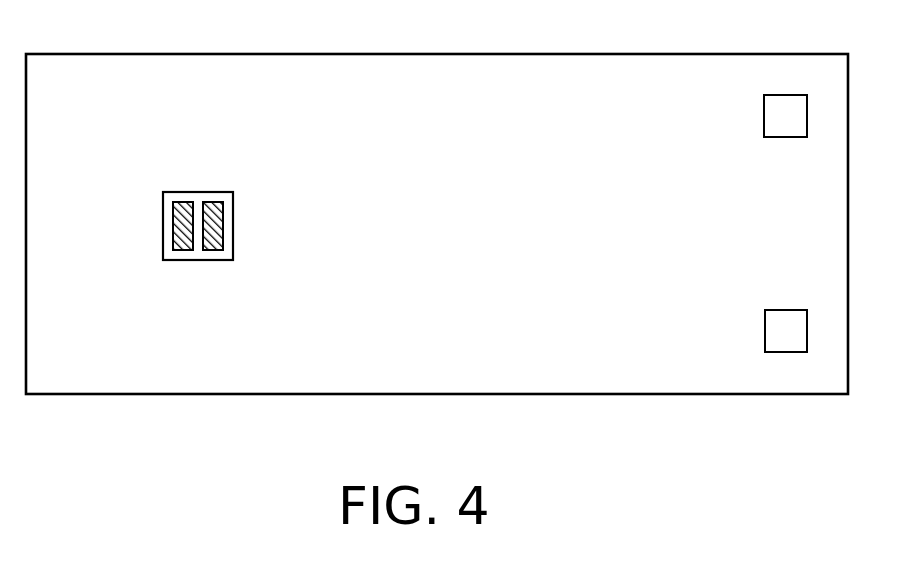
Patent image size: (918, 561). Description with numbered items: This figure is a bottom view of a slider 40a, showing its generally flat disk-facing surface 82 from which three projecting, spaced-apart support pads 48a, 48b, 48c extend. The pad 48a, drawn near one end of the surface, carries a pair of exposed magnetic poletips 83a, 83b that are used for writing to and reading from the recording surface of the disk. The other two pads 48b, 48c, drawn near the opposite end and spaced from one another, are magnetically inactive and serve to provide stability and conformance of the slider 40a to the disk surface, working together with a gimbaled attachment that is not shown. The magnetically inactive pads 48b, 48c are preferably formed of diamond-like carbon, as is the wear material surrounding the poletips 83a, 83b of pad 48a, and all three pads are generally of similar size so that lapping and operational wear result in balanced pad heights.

The disk-facing surface 82 is at (683, 378).
The slider 40a is at (689, 42).
The support pad 48a is at (198, 262).
The magnetic poletip 83a is at (184, 200).
The magnetic poletip 83b is at (212, 200).
The support pad 48b is at (780, 138).
The support pad 48c is at (783, 309).